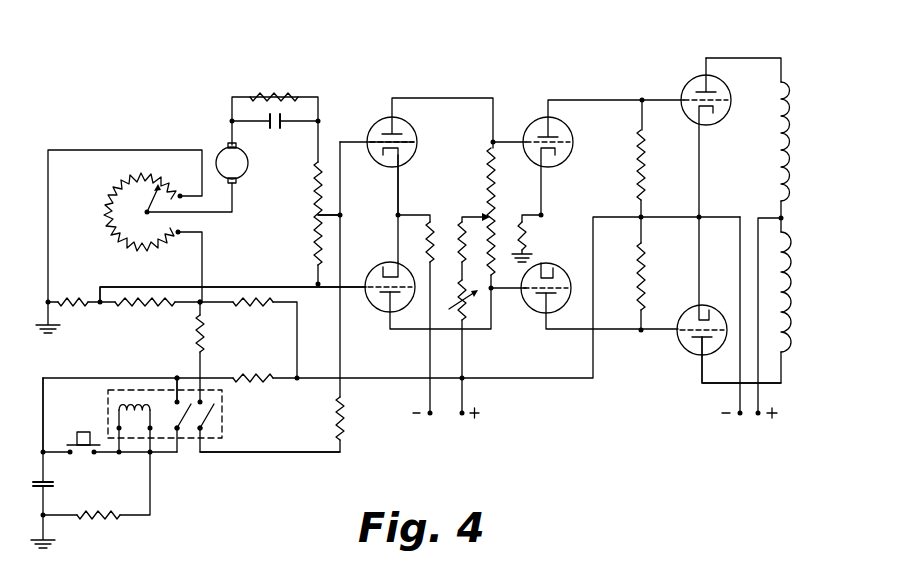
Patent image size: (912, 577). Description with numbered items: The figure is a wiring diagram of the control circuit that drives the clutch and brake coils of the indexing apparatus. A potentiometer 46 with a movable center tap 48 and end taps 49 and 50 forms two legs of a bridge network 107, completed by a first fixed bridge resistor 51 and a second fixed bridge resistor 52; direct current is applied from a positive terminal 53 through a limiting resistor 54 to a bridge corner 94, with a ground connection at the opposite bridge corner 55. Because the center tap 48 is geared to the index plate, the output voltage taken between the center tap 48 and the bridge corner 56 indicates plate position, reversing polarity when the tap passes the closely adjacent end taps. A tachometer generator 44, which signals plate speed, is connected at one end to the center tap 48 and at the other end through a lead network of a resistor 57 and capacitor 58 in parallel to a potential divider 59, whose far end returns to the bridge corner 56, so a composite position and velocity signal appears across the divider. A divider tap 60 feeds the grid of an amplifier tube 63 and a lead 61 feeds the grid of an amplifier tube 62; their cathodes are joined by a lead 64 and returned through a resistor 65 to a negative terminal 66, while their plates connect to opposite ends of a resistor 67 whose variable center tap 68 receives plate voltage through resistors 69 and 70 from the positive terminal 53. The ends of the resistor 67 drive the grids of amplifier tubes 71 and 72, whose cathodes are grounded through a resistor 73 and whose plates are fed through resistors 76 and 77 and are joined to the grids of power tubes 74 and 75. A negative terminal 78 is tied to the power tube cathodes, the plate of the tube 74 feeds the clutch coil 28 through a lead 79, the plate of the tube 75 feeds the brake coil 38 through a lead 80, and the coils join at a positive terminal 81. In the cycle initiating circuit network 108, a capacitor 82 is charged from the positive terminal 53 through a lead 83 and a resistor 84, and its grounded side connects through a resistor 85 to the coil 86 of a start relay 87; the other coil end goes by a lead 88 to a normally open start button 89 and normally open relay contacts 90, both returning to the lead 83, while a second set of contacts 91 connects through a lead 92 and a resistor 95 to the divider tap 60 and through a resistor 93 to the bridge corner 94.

The clutch coil 28 is at (779, 146).
The brake coil 38 is at (785, 285).
The tachometer generator 44 is at (248, 163).
The potentiometer 46 is at (118, 184).
The center tap 48 is at (152, 200).
The end tap 49 is at (182, 194).
The end tap 50 is at (180, 234).
The first fixed bridge resistor 51 is at (128, 306).
The second fixed bridge resistor 52 is at (72, 306).
The positive terminal 53 is at (462, 416).
The limiting resistor 54 is at (252, 306).
The bridge corner 55 is at (45, 301).
The bridge corner 56 is at (101, 301).
The resistor 57 is at (275, 95).
The capacitor 58 is at (283, 125).
The potential divider 59 is at (313, 234).
The divider tap 60 is at (341, 212).
The lead 61 is at (342, 272).
The amplifier tube 62 is at (380, 305).
The amplifier tube 63 is at (385, 118).
The lead 64 is at (400, 185).
The resistor 65 is at (433, 223).
The negative terminal 66 is at (430, 416).
The resistor 67 is at (488, 172).
The variable center tap 68 is at (465, 218).
The resistor 69 is at (460, 258).
The resistor 70 is at (470, 322).
The amplifier tube 71 is at (537, 120).
The amplifier tube 72 is at (540, 314).
The resistor 73 is at (523, 224).
The power tube 74 is at (684, 86).
The power tube 75 is at (683, 352).
The resistor 76 is at (636, 172).
The resistor 77 is at (636, 270).
The negative terminal 78 is at (738, 416).
The lead 79 is at (753, 57).
The lead 80 is at (709, 384).
The positive terminal 81 is at (757, 416).
The capacitor 82 is at (54, 485).
The lead 83 is at (42, 400).
The resistor 84 is at (262, 376).
The resistor 85 is at (100, 519).
The coil 86 is at (118, 403).
The start relay 87 is at (223, 424).
The lead 88 is at (164, 455).
The start button 89 is at (90, 430).
The relay contacts 90 is at (177, 401).
The contacts 91 is at (216, 410).
The lead 92 is at (272, 455).
The resistor 93 is at (204, 334).
The bridge corner 94 is at (202, 301).
The resistor 95 is at (343, 428).
The bridge network 107 is at (96, 266).
The cycle initiating circuit network 108 is at (194, 504).